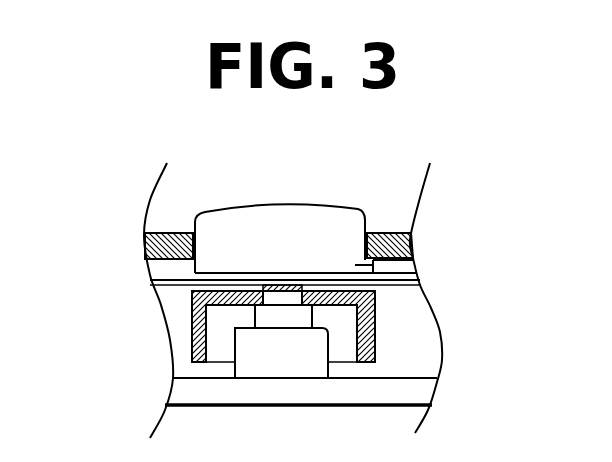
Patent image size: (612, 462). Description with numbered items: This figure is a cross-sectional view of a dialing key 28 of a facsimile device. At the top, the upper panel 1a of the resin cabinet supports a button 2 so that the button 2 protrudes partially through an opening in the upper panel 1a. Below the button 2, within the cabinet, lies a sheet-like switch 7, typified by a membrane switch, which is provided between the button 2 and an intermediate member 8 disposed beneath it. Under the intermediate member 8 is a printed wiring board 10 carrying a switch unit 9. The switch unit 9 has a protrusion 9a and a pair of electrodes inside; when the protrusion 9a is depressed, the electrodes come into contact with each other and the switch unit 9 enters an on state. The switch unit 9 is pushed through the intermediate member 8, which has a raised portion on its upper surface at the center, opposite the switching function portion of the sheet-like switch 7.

The dialing key 28 is at (75, 179).
The upper panel 1a is at (400, 250).
The button 2 is at (415, 267).
The sheet-like switch 7 is at (392, 286).
The intermediate member 8 is at (375, 332).
The switch unit 9 is at (250, 348).
The protrusion 9a is at (263, 313).
The printed wiring board 10 is at (377, 392).